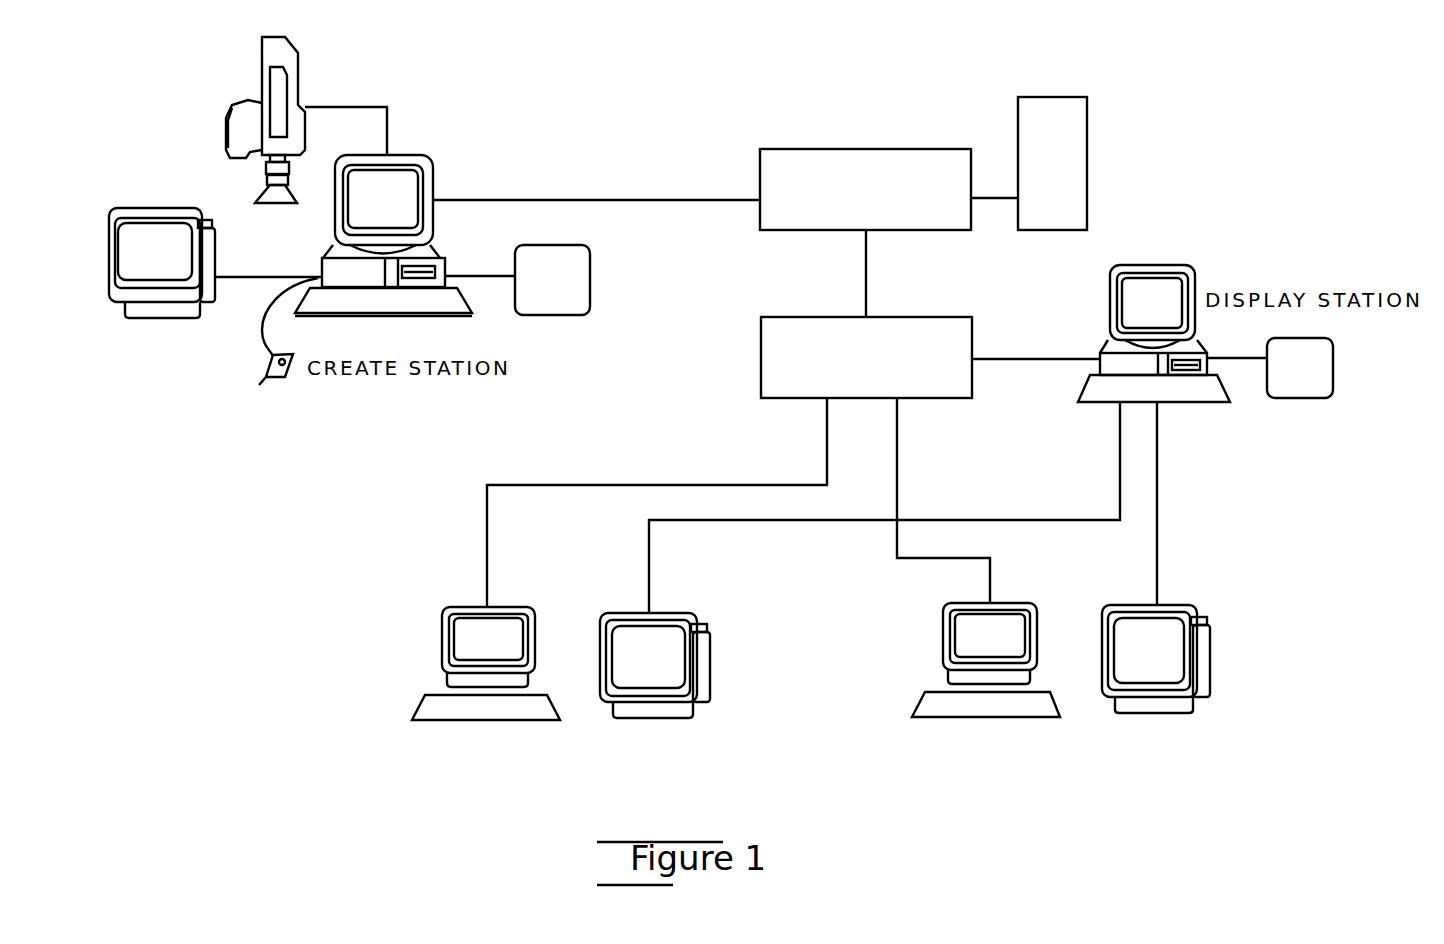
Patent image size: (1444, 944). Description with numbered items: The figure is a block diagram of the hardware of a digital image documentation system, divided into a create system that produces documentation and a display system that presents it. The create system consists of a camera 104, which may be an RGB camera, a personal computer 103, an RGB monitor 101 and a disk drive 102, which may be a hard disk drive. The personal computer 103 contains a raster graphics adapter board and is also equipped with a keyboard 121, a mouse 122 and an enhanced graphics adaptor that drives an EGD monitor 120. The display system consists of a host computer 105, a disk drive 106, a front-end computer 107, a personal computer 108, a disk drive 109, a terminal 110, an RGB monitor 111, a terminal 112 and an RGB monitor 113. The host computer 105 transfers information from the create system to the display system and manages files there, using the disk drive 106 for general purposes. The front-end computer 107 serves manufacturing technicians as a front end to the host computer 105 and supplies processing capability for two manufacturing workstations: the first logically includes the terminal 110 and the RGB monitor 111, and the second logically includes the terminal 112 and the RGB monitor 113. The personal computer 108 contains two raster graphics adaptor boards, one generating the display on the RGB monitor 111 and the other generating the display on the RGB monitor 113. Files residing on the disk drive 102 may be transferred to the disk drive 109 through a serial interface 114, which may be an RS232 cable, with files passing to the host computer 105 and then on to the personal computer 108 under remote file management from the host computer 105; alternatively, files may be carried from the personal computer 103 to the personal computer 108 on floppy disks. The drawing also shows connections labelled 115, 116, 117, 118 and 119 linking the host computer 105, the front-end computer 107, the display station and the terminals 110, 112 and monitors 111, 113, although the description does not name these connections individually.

The RGB monitor 101 is at (215, 262).
The disk drive 102 is at (585, 250).
The personal computer 103 is at (440, 250).
The camera 104 is at (305, 62).
The host computer 105 is at (893, 149).
The disk drive 106 is at (1040, 97).
The front-end computer 107 is at (970, 393).
The personal computer 108 is at (1183, 268).
The disk drive 109 is at (1300, 398).
The terminal 110 is at (520, 720).
The RGB monitor 111 is at (668, 718).
The terminal 112 is at (990, 717).
The RGB monitor 113 is at (1160, 713).
The serial interface 114 is at (561, 198).
The communication line 115 is at (866, 265).
The communication line 116 is at (487, 578).
The communication line 117 is at (990, 582).
The communication line 118 is at (649, 578).
The communication line 119 is at (1157, 582).
The EGD monitor 120 is at (428, 158).
The keyboard 121 is at (448, 316).
The mouse 122 is at (259, 385).